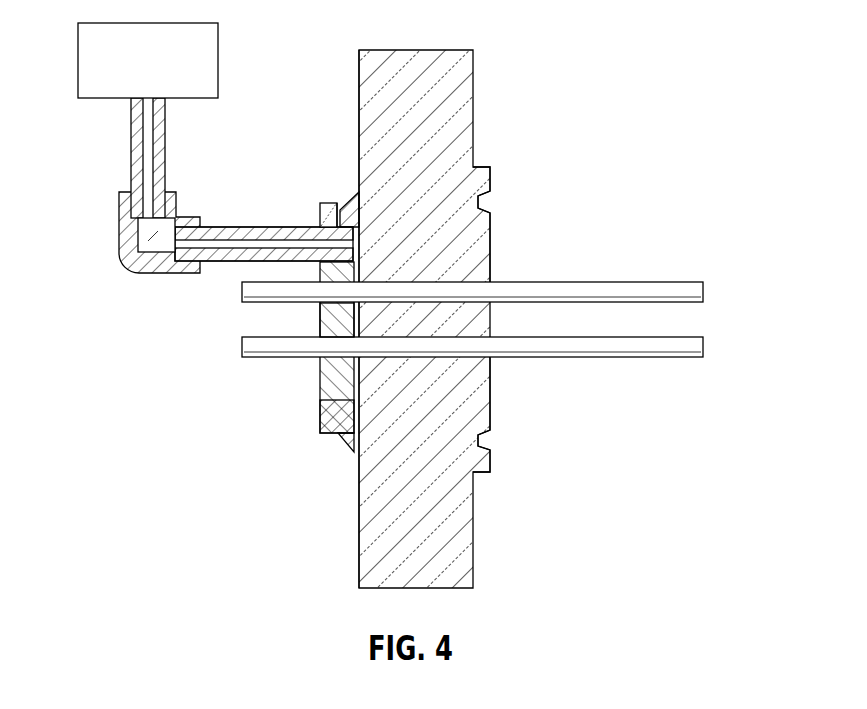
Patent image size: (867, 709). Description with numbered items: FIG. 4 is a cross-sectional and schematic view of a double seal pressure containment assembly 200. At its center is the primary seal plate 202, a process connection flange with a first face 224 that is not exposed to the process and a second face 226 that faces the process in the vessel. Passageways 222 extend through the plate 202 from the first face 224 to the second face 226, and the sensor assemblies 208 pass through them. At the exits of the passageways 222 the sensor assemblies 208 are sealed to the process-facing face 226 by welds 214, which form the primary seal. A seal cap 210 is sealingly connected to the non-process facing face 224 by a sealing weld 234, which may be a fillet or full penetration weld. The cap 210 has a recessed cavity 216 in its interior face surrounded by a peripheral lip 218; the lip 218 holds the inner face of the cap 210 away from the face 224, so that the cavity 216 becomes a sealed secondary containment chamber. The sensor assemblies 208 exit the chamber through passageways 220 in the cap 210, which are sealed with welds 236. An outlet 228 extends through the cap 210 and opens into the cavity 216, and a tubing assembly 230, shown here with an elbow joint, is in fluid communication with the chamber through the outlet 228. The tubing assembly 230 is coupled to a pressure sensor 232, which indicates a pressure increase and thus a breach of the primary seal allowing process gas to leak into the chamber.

The double seal pressure containment assembly 200 is at (536, 74).
The primary seal plate 202 is at (411, 50).
The sensor assemblies 208 is at (695, 303).
The seal cap 210 is at (320, 213).
The seal weld 214 is at (490, 281).
The cavity 216 is at (355, 402).
The lip 218 is at (345, 437).
The passageways 220 is at (320, 382).
The passageways 222 is at (466, 358).
The first face 224 is at (358, 100).
The second face 226 is at (490, 228).
The outlet 228 is at (336, 205).
The tubing assembly 230 is at (131, 160).
The pressure sensor 232 is at (167, 72).
The sealing weld 234 is at (352, 193).
The welds 236 is at (318, 329).